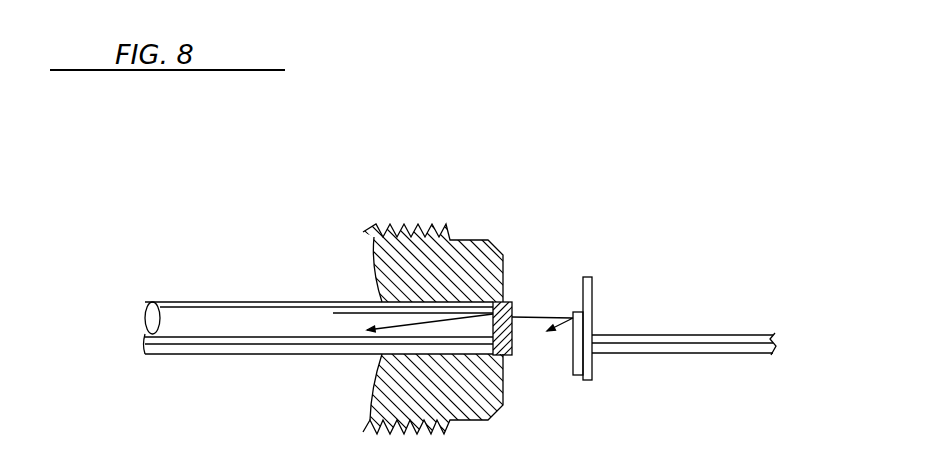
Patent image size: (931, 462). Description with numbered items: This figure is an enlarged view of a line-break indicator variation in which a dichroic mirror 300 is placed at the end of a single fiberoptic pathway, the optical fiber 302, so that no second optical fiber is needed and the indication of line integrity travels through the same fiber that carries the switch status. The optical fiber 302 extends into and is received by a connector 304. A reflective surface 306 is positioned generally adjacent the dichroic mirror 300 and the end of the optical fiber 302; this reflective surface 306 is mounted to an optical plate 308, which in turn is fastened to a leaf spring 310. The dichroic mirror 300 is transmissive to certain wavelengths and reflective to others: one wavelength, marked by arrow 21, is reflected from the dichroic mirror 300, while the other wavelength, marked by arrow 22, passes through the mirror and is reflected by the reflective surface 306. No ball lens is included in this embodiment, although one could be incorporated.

The dichroic mirror 300 is at (510, 298).
The optical fiber 302 is at (327, 298).
The connector 304 is at (413, 243).
The reflective surface 306 is at (573, 382).
The optical plate 308 is at (596, 275).
The leaf spring 310 is at (654, 331).
The view direction arrow 21 is at (415, 325).
The view direction arrow 22 is at (542, 334).